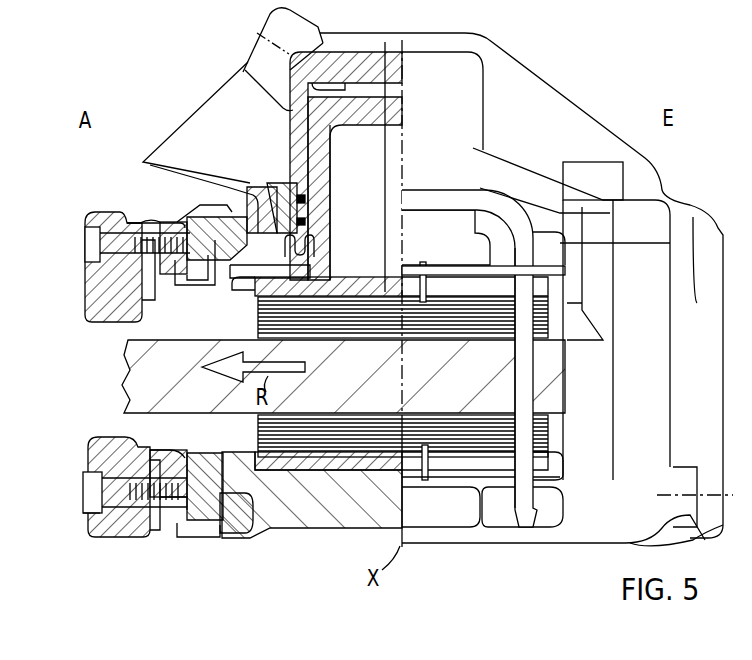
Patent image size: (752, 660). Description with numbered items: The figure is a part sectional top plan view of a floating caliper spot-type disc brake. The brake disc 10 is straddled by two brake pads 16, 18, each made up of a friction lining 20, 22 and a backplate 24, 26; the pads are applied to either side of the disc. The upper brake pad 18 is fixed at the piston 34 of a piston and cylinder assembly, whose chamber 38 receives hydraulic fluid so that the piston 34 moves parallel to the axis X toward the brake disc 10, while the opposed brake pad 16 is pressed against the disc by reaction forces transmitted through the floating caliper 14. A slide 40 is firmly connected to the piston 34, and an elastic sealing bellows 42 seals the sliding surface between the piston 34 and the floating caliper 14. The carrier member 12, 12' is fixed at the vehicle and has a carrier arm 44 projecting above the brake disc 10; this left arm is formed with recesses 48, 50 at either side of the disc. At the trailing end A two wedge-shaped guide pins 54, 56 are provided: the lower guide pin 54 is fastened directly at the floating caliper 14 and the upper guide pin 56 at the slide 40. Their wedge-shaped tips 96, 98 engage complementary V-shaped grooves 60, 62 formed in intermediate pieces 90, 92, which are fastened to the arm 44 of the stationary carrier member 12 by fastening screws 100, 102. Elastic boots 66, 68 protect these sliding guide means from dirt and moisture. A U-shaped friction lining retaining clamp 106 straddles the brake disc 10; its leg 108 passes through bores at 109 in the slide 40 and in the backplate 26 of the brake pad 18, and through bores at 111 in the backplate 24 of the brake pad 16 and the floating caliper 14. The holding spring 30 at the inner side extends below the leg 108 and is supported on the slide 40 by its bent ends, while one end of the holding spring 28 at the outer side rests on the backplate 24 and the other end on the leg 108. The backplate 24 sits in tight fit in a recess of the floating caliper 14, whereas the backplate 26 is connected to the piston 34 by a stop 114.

The brake disc 10 is at (348, 392).
The carrier member 12 is at (101, 289).
The lower bearing bracket 12' is at (119, 525).
The floating caliper 14 is at (248, 66).
The brake pad 16 is at (347, 480).
The brake pad 18 is at (343, 276).
The friction lining 20 is at (540, 432).
The friction lining 22 is at (497, 320).
The backplate 24 is at (298, 470).
The backplate 26 is at (375, 280).
The holding spring 28 is at (460, 480).
The holding spring 30 is at (440, 222).
The piston 34 is at (318, 165).
The chamber 38 is at (372, 85).
The slide 40 is at (255, 205).
The sealing bellows 42 is at (283, 195).
The carrier arm 44 is at (122, 318).
The recess 48 is at (95, 527).
The recess 50 is at (102, 218).
The guide pin 54 is at (238, 520).
The guide pin 56 is at (232, 205).
The groove 60 is at (215, 468).
The groove 62 is at (195, 272).
The boot 66 is at (192, 540).
The boot 68 is at (190, 200).
The intermediate piece 90 is at (170, 470).
The intermediate piece 92 is at (165, 275).
The wedge-shaped tip 96 is at (172, 530).
The wedge-shaped tip 98 is at (178, 208).
The fastening screw 100 is at (115, 490).
The fastening screw 102 is at (100, 240).
The friction lining retaining clamp 106 is at (482, 183).
The leg 108 is at (525, 400).
The bores 109 is at (545, 262).
The bores 111 is at (555, 490).
The stop 114 is at (238, 286).